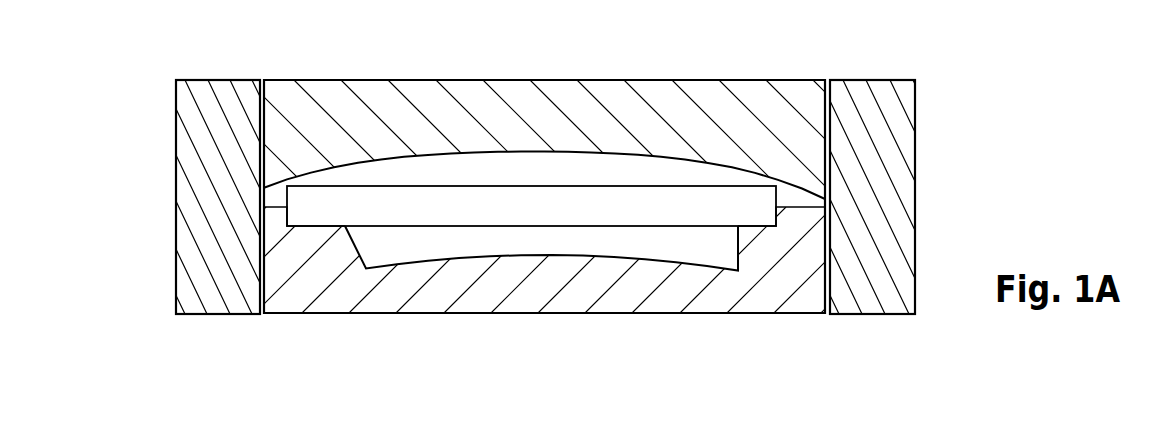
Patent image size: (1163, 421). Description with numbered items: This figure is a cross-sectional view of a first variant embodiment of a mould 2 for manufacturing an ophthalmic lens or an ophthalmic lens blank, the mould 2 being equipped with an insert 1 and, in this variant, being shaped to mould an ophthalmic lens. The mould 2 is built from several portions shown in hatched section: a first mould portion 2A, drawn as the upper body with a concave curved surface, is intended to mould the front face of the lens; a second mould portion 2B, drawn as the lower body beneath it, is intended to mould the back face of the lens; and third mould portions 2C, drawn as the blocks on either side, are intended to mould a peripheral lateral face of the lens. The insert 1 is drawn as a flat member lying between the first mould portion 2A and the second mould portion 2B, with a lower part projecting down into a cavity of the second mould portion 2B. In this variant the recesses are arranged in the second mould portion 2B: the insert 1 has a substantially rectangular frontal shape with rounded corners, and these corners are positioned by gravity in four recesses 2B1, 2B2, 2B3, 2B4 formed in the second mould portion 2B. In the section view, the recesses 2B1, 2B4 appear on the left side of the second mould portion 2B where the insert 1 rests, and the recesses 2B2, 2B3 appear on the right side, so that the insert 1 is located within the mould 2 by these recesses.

The insert 1 is at (552, 196).
The mould 2 is at (553, 209).
The first mould portion 2A is at (653, 127).
The second mould portion 2B is at (543, 297).
The third mould portion 2C is at (200, 184).
The recess 2B1 is at (322, 291).
The recess 2B2 is at (783, 297).
The recess 2B3 is at (753, 227).
The recess 2B4 is at (310, 227).